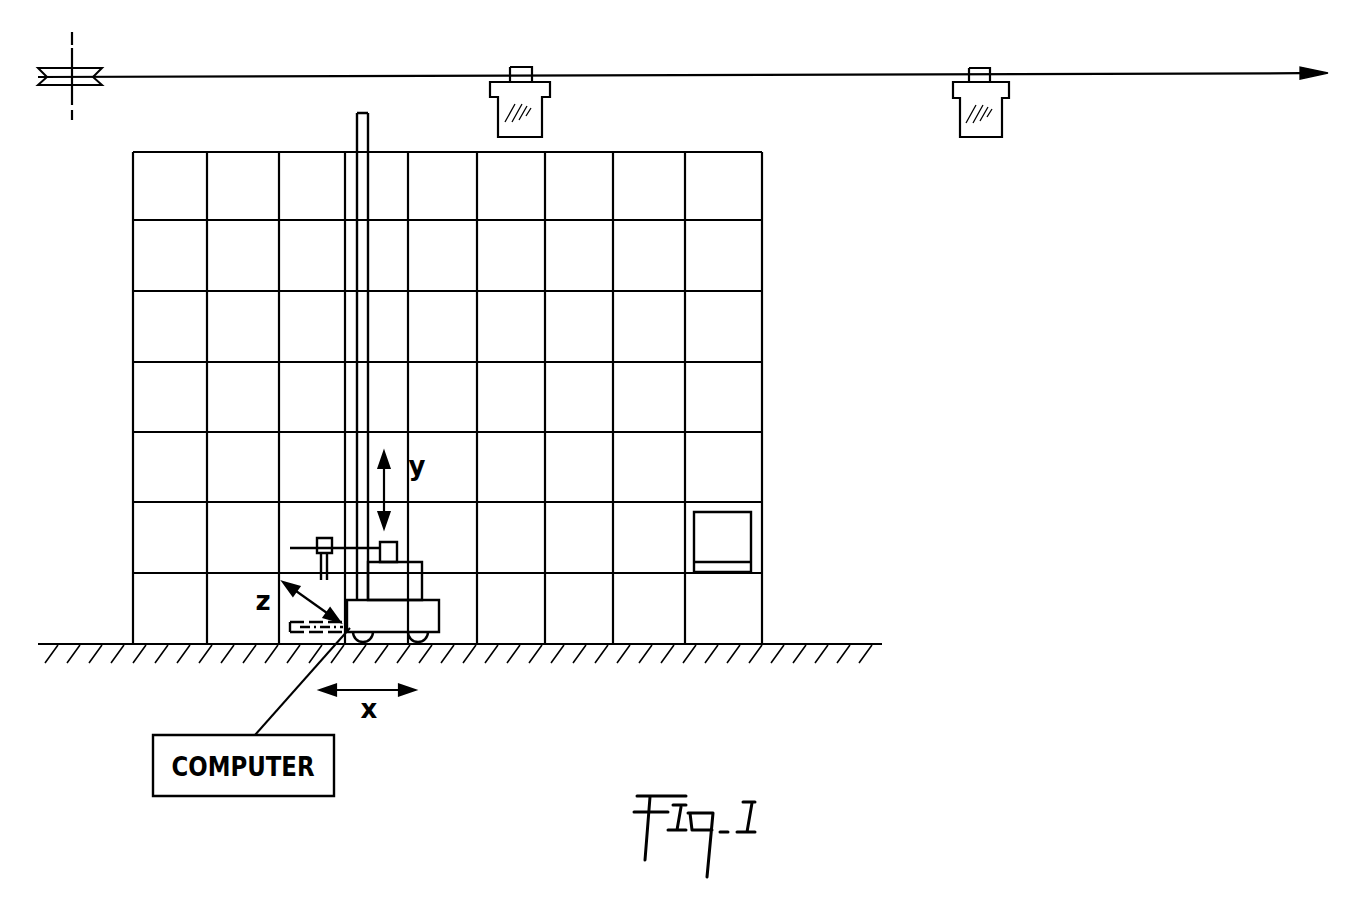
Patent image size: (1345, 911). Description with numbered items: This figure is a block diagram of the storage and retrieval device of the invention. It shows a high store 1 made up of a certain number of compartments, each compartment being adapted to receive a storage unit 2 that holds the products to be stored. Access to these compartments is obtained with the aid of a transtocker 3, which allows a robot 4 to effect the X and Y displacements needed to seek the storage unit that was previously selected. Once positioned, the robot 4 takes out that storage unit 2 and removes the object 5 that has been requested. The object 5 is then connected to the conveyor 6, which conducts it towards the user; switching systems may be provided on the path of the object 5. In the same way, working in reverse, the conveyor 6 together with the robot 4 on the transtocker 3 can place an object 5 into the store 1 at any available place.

The high store 1 is at (775, 340).
The storage unit 2 is at (740, 543).
The transtocker 3 is at (430, 627).
The robot 4 is at (410, 568).
The object 5 is at (533, 118).
The conveyor 6 is at (802, 75).